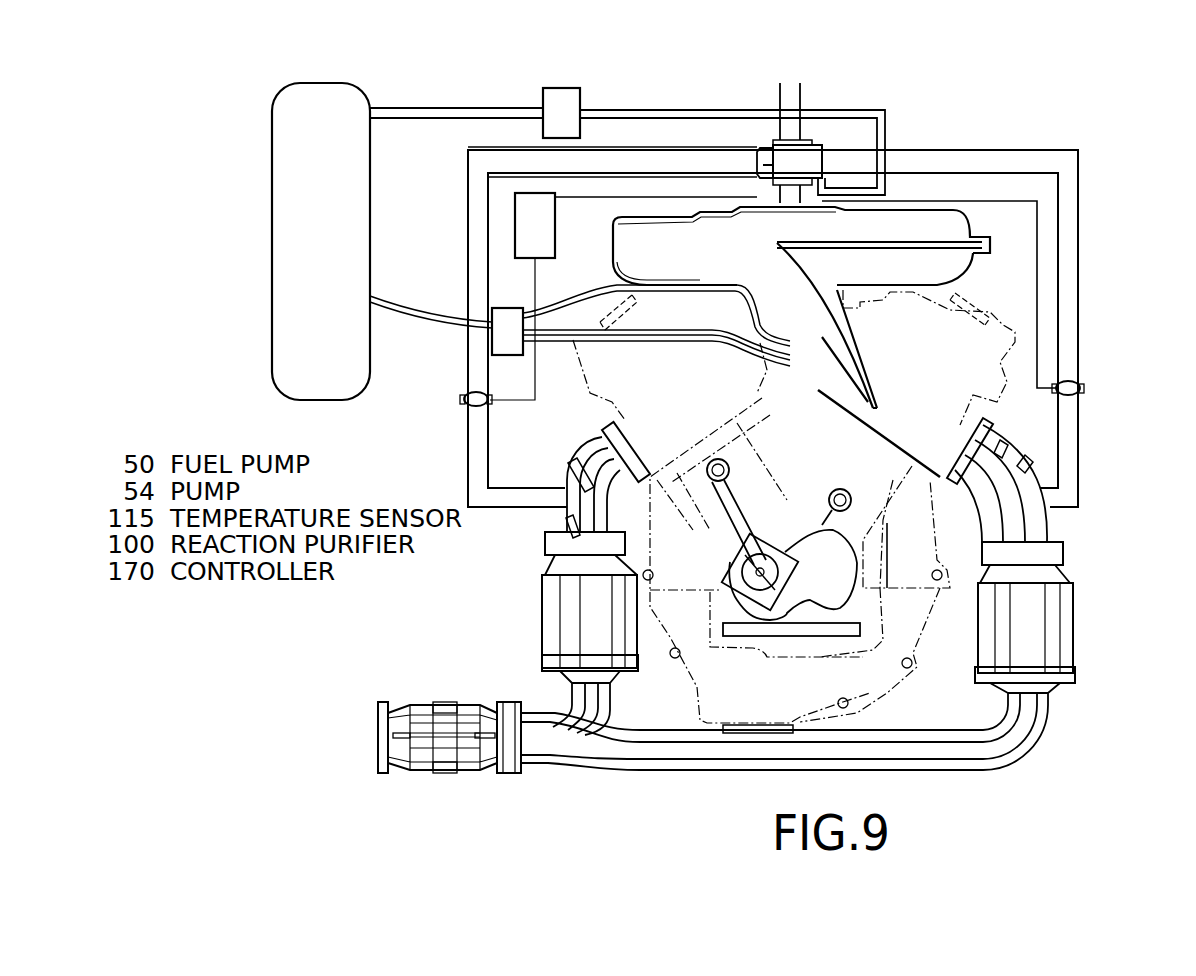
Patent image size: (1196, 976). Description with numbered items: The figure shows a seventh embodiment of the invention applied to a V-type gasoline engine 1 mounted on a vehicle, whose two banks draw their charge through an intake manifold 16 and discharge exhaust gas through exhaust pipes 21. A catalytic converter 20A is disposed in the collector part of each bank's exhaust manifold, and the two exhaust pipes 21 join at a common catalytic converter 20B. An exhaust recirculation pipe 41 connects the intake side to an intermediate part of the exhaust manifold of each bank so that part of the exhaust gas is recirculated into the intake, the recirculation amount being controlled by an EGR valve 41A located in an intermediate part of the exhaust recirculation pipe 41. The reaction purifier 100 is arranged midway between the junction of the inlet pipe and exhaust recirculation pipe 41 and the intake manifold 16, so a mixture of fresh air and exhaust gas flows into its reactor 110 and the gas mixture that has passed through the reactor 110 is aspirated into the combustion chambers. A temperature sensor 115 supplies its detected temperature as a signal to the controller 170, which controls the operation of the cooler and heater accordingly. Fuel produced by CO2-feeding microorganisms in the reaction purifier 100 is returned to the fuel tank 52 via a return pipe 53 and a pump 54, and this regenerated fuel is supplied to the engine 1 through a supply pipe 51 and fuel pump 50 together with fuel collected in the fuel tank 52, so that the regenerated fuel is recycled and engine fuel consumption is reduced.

The V-type gasoline engine 1 is at (560, 438).
The intake manifold 16 is at (820, 280).
The catalytic converter 20A is at (560, 617).
The common catalytic converter 20B is at (442, 755).
The exhaust pipe 21 is at (732, 750).
The exhaust recirculation pipe 41 is at (473, 227).
The EGR valve 41A is at (468, 412).
The fuel pump 50 is at (490, 340).
The supply pipe 51 is at (407, 308).
The fuel tank 52 is at (275, 220).
The return pipe 53 is at (450, 108).
The pump 54 is at (557, 87).
The reaction purifier 100 is at (730, 130).
The reactor 110 is at (813, 147).
The temperature sensor 115 is at (767, 142).
The controller 170 is at (555, 228).